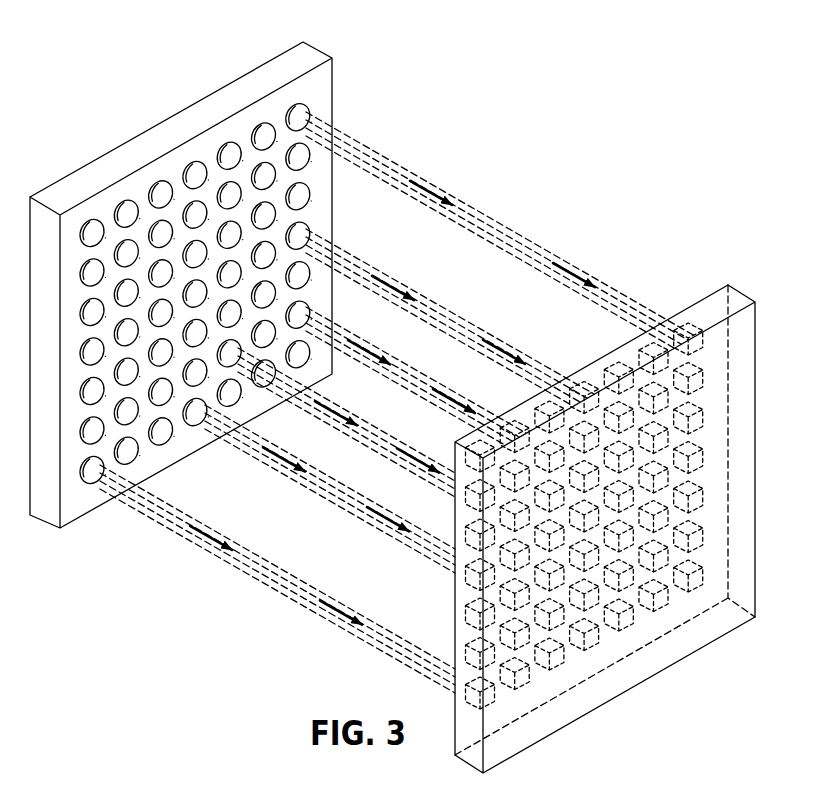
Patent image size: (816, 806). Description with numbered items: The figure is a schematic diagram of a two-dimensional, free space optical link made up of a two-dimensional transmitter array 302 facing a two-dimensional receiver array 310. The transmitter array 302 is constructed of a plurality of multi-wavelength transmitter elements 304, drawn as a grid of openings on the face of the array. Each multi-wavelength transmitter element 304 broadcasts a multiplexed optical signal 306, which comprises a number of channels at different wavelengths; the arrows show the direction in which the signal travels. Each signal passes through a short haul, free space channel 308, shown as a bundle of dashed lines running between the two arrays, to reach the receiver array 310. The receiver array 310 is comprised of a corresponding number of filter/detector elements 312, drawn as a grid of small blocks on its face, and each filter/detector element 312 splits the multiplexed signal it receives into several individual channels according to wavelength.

The two-dimensional transmitter array 302 is at (265, 63).
The multi-wavelength transmitter element 304 is at (190, 165).
The multiplexed optical signal 306 is at (422, 180).
The short haul, free space channel 308 is at (543, 245).
The two-dimensional receiver array 310 is at (755, 300).
The filter/detector element 312 is at (602, 646).